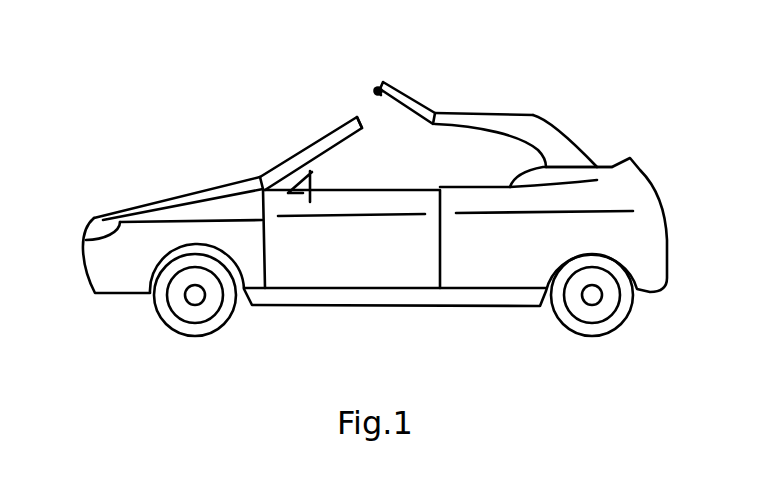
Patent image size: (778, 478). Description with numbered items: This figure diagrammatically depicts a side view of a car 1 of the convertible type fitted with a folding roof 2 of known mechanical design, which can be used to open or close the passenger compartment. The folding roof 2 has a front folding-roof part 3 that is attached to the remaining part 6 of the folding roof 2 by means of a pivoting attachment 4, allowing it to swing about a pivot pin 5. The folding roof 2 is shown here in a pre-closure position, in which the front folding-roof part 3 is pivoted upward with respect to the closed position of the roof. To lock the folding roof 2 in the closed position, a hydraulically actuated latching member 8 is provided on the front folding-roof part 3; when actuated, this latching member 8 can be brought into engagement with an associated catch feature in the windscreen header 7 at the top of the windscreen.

The car 1 is at (193, 178).
The folding roof 2 is at (476, 93).
The front folding-roof part 3 is at (420, 102).
The pivoting attachment 4 is at (438, 112).
The pivot pin 5 is at (435, 128).
The remaining part of the folding roof 6 is at (555, 91).
The windscreen header 7 is at (361, 118).
The hydraulically actuated latching member 8 is at (379, 89).